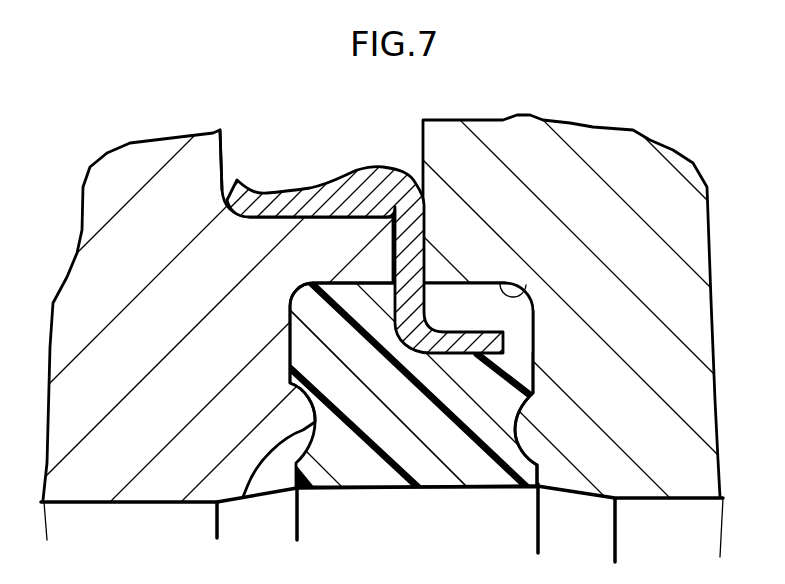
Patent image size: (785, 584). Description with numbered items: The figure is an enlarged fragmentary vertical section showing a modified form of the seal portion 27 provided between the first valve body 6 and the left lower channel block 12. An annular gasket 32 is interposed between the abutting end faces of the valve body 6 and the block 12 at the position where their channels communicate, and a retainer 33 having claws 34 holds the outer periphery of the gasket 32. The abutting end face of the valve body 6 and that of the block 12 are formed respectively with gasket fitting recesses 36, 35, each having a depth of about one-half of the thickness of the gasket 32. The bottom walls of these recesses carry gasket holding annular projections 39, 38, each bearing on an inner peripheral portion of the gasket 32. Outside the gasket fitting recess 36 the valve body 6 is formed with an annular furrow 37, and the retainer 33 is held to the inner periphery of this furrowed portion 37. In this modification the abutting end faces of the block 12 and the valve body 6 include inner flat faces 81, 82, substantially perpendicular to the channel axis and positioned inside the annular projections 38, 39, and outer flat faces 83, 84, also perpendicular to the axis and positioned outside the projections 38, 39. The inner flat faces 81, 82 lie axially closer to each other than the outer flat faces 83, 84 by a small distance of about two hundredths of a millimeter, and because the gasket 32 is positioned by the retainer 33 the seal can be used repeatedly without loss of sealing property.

The first valve body 6 is at (127, 463).
The left lower channel block 12 is at (675, 463).
The seal portion 27 is at (556, 431).
The annular gasket 32 is at (438, 470).
The retainer 33 is at (380, 178).
The claws 34 is at (485, 330).
The gasket fitting recess 35 is at (518, 292).
The gasket fitting recess 36 is at (298, 310).
The annular furrow 37 is at (222, 167).
The gasket holding annular projection 38 is at (530, 447).
The gasket holding annular projection 39 is at (249, 490).
The inner flat face 81 is at (535, 469).
The inner flat face 82 is at (298, 466).
The outer flat face 83 is at (528, 375).
The outer flat face 84 is at (291, 362).